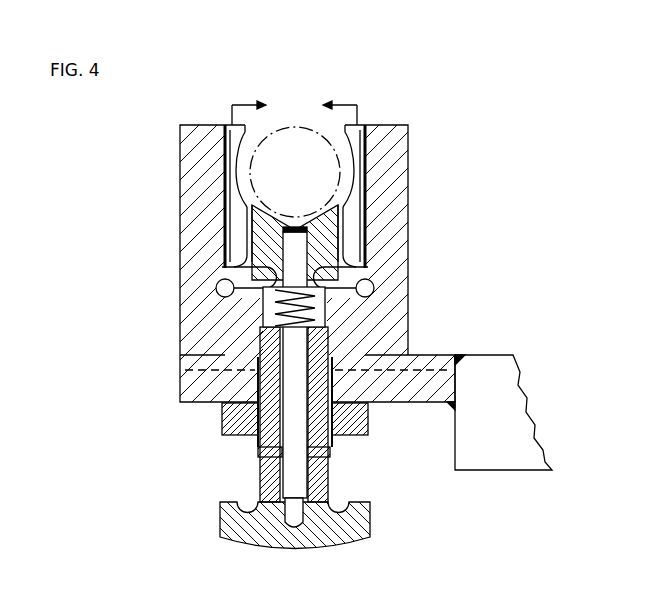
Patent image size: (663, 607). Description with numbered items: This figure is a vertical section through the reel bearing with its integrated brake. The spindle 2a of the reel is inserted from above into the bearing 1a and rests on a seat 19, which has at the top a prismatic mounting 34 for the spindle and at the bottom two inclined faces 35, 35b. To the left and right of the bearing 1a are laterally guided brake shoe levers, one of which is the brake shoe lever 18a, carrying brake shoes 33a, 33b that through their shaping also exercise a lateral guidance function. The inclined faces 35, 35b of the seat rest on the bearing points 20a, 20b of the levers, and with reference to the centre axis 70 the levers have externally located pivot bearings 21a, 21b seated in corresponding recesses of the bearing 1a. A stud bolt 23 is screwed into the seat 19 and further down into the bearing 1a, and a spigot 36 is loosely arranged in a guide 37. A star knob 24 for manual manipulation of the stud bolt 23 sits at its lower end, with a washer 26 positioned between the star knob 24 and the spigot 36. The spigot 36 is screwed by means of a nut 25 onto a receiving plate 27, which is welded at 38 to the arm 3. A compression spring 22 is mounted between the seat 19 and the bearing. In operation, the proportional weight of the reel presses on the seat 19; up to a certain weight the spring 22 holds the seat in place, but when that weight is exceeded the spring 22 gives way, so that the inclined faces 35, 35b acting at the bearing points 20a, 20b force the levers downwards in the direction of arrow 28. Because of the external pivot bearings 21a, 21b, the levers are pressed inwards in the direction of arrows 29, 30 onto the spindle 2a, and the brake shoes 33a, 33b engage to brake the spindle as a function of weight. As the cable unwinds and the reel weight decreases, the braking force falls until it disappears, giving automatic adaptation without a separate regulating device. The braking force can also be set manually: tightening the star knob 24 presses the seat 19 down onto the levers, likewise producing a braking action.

The bearing 1a is at (403, 340).
The spindle 2a is at (308, 128).
The arm 3 is at (513, 465).
The brake shoe lever 18a is at (217, 138).
The seat 19 is at (350, 225).
The bearing point 20a is at (243, 264).
The bearing point 20b is at (360, 275).
The pivot bearing 21a is at (220, 303).
The pivot bearing 21b is at (378, 299).
The compression spring 22 is at (266, 318).
The stud bolt 23 is at (300, 481).
The star knob 24 is at (340, 535).
The nut 25 is at (245, 420).
The washer 26 is at (268, 452).
The receiving plate 27 is at (405, 398).
The arrow 28 is at (291, 92).
The arrow 29 is at (232, 105).
The arrow 30 is at (357, 105).
The brake shoe 33a is at (233, 167).
The brake shoe 33b is at (345, 170).
The prismatic mounting 34 is at (338, 215).
The inclined face 35 is at (250, 245).
The inclined face 35b is at (347, 245).
The spigot 36 is at (262, 457).
The guide 37 is at (237, 392).
The weld 38 is at (455, 410).
The centre axis 70 is at (295, 108).